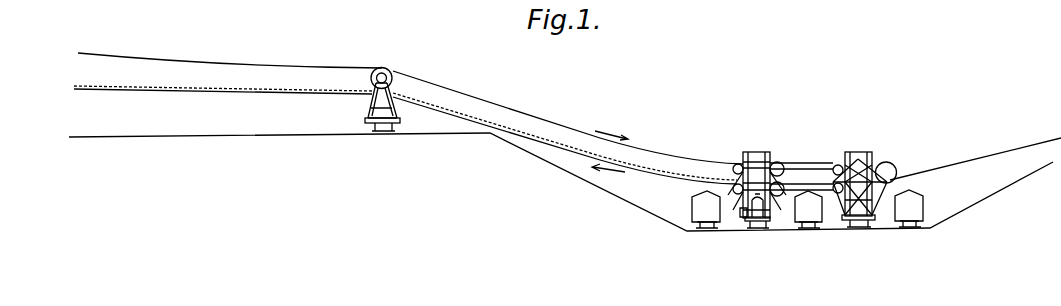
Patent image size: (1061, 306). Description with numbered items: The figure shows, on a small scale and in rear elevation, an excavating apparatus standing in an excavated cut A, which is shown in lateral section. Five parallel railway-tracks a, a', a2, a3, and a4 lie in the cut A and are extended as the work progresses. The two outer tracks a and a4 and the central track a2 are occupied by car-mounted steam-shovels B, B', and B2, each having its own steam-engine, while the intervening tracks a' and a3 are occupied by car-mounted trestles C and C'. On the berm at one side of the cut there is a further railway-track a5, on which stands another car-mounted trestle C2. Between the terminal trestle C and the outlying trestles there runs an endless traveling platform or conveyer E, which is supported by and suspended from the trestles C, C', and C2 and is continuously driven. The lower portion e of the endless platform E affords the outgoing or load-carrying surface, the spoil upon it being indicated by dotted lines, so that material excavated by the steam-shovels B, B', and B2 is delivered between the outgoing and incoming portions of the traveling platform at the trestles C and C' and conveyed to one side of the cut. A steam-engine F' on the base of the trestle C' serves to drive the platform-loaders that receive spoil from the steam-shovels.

The excavated cut A is at (561, 197).
The endless traveling platform E is at (569, 116).
The lower portion of the endless platform e is at (453, 140).
The car-mounted trestle C2 is at (382, 79).
The railway-track a5 is at (382, 137).
The car-mounted trestle C' is at (757, 175).
The railway-track a3 is at (757, 233).
The steam-engine F' is at (736, 242).
The car-mounted trestle C is at (865, 173).
The railway-track a' is at (858, 232).
The car-mounted steam-shovel B2 is at (706, 206).
The railway-track a4 is at (707, 236).
The car-mounted steam-shovel B' is at (808, 206).
The railway-track a2 is at (809, 236).
The car-mounted steam-shovel B is at (909, 205).
The railway-track a is at (910, 235).